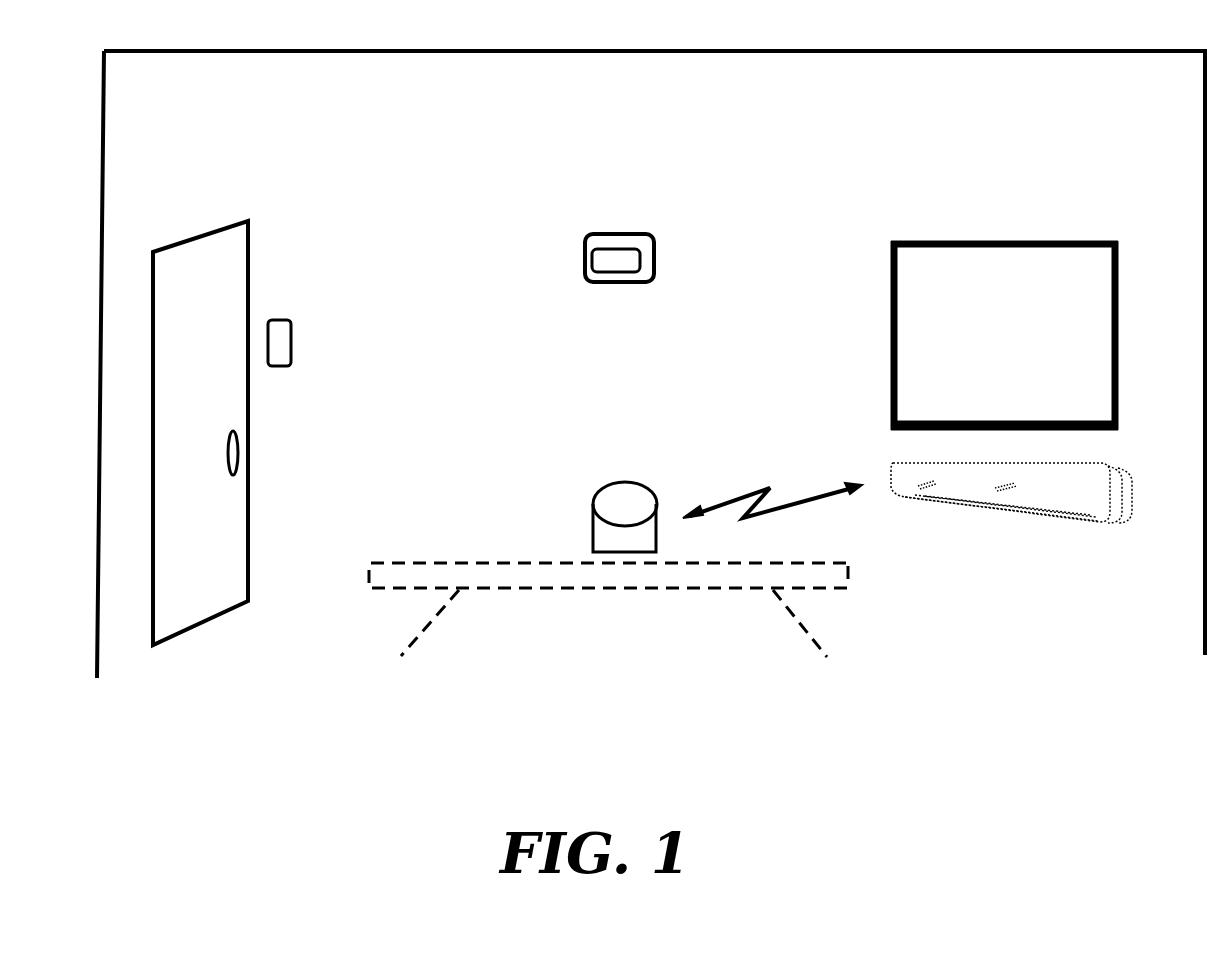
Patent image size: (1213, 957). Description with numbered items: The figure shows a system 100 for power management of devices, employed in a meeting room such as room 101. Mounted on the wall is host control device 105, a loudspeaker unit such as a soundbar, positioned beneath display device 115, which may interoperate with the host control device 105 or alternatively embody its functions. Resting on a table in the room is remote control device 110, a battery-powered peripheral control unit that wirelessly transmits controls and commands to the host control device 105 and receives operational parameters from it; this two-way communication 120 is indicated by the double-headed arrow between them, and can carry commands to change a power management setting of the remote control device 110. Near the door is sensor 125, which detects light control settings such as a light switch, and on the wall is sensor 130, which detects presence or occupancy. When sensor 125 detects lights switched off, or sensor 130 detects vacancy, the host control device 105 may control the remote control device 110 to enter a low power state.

The system 100 is at (338, 202).
The room 101 is at (127, 241).
The host control device 105 is at (1100, 481).
The remote control device 110 is at (624, 481).
The display device 115 is at (1102, 261).
The two-way communication 120 is at (772, 482).
The sensor 125 is at (291, 324).
The sensor 130 is at (646, 236).